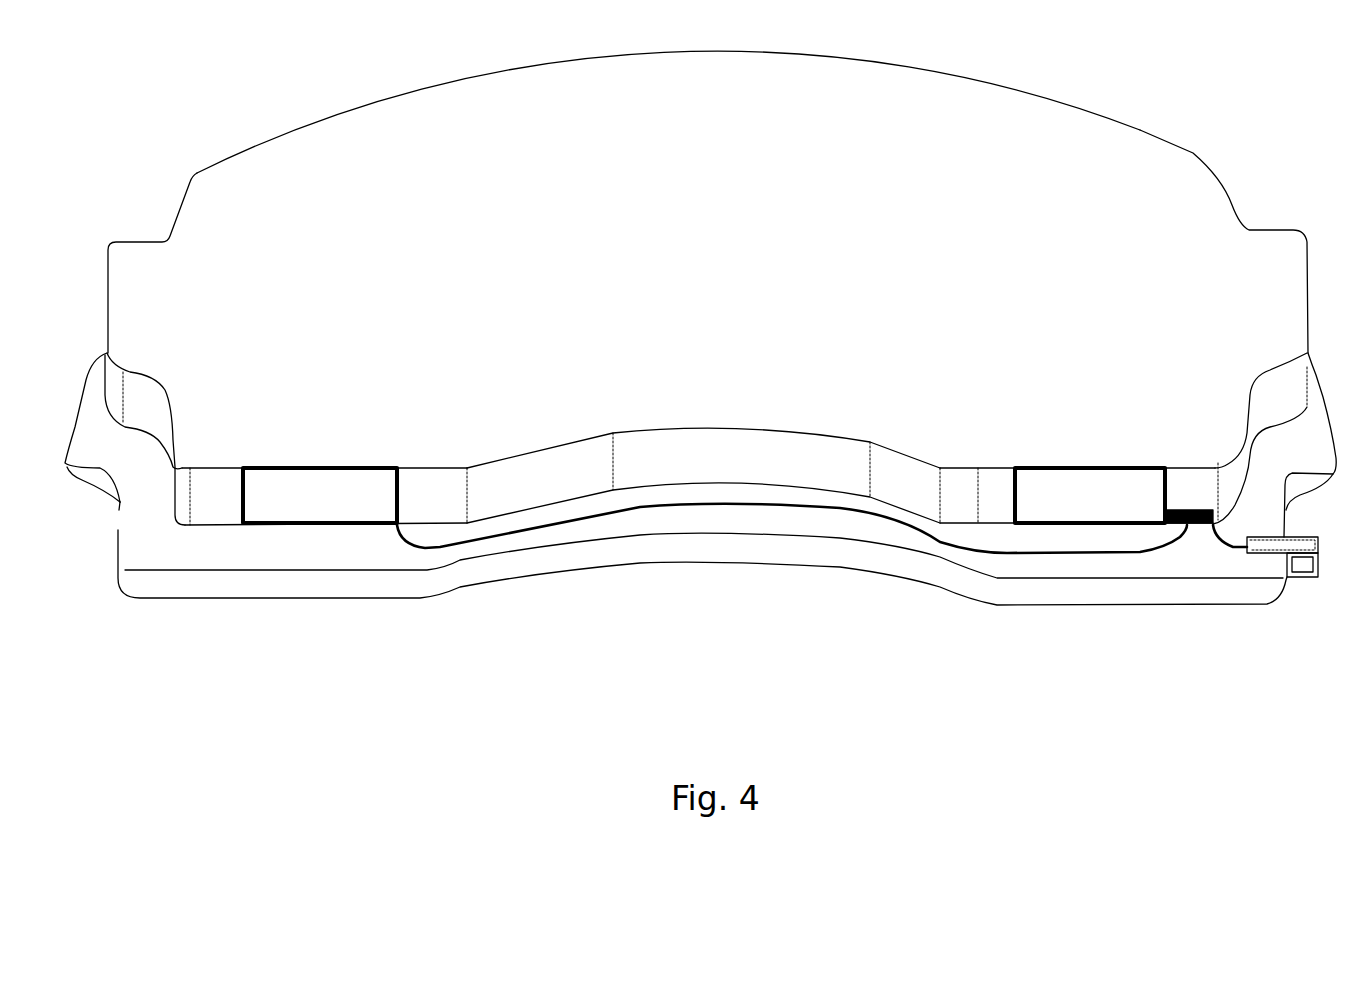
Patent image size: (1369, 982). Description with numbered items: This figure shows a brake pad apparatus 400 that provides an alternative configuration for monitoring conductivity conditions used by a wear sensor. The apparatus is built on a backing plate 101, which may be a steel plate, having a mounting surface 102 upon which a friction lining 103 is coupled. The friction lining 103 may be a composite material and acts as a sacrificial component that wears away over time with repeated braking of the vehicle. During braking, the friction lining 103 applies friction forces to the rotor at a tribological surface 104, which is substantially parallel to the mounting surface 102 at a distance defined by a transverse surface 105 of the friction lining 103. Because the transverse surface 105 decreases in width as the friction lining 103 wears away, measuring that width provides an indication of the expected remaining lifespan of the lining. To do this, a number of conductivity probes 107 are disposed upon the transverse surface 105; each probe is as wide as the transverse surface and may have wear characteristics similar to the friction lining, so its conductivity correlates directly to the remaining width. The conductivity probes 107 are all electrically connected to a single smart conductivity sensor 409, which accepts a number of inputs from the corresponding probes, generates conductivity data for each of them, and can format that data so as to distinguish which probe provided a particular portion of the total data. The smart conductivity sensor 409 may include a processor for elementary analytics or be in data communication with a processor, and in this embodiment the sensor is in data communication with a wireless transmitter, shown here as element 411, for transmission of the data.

The brake pad apparatus 400 is at (169, 147).
The backing plate 101 is at (622, 552).
The mounting surface 102 is at (140, 553).
The friction lining 103 is at (1142, 130).
The tribological surface 104 is at (1050, 124).
The transverse surface 105 is at (785, 457).
The conductivity probe 107 is at (305, 493).
The smart conductivity sensor 409 is at (1197, 510).
The retention clip 411 is at (1293, 573).